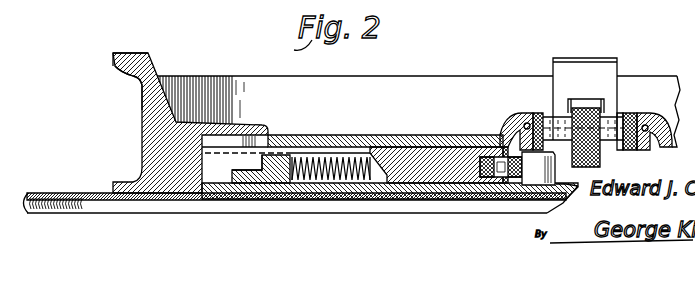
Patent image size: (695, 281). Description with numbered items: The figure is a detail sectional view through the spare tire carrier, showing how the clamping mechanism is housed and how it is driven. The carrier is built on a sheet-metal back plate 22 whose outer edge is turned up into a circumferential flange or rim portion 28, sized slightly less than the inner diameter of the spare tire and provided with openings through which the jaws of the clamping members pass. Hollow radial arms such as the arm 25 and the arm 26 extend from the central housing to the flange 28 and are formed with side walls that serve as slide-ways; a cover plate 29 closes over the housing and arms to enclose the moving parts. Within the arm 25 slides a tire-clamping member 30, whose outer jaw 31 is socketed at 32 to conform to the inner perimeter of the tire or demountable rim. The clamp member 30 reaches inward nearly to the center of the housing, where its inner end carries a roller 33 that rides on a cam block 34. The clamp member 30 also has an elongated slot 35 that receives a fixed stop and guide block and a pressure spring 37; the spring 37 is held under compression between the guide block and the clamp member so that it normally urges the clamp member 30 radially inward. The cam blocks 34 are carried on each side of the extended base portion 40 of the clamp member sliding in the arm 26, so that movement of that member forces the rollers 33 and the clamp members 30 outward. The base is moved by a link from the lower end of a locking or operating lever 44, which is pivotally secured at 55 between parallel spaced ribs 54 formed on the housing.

The back plate 22 is at (245, 198).
The radially disposed arm 25 is at (265, 199).
The radially disposed arm 26 is at (263, 177).
The flange or rim portion 28 is at (338, 77).
The cover plate 29 is at (373, 147).
The tire-clamping member 30 is at (152, 139).
The jaw 31 is at (134, 53).
The socket 32 is at (138, 88).
The roller 33 is at (478, 203).
The cam block 34 is at (512, 203).
The elongated slot 35 is at (346, 199).
The pressure spring 37 is at (322, 203).
The extended base portion 40 is at (533, 205).
The locking or operating lever 44 is at (584, 108).
The ribs 54 is at (535, 112).
The pivot 55 is at (620, 115).